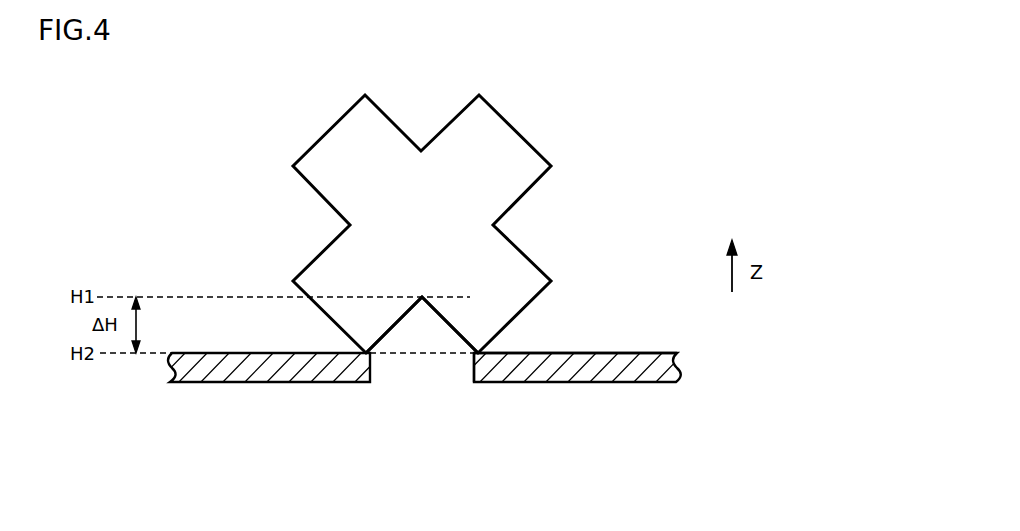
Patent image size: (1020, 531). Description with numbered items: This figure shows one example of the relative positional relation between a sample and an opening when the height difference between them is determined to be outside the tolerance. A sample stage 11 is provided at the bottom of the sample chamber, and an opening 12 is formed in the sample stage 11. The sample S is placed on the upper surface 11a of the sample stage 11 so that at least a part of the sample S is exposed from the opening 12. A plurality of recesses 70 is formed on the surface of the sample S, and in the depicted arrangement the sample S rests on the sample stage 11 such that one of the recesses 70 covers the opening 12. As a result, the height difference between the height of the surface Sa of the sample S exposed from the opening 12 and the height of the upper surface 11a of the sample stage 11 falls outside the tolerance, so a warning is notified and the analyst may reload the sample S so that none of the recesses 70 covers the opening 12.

The recesses 70 is at (330, 224).
The sample S is at (523, 152).
The surface of the sample Sa is at (435, 313).
The sample stage 11 is at (655, 376).
The upper surface of the sample stage 11a is at (608, 352).
The opening 12 is at (474, 367).